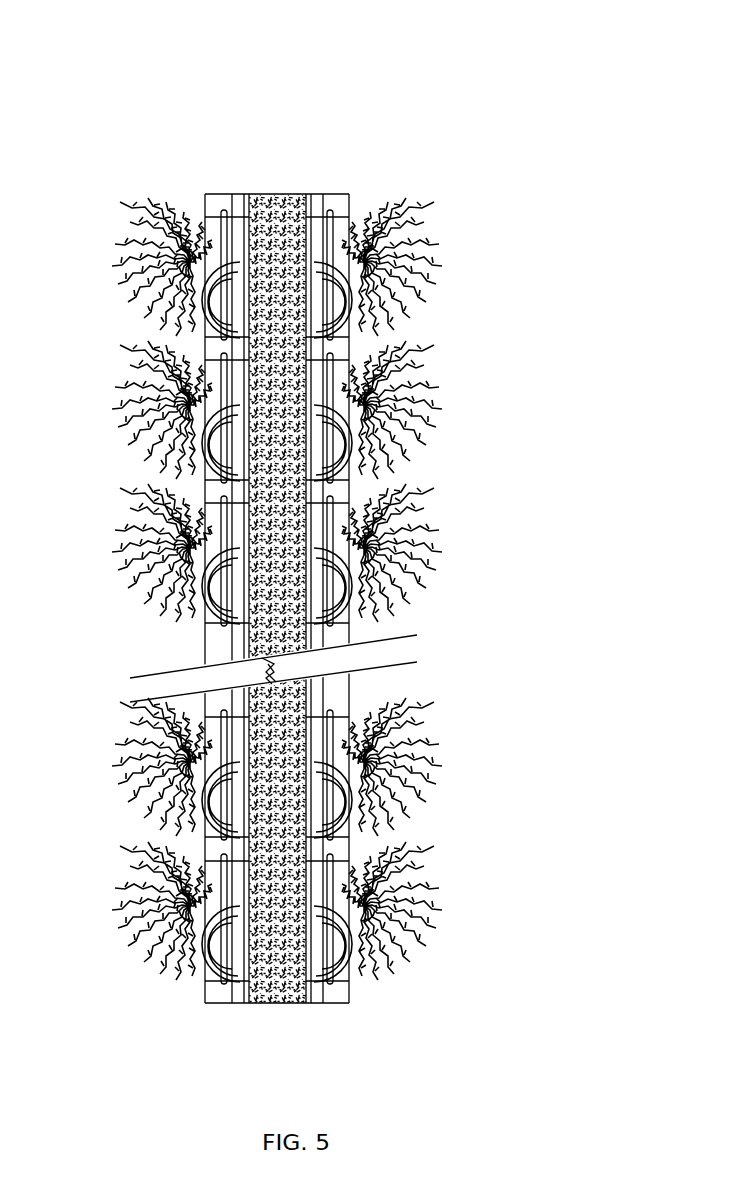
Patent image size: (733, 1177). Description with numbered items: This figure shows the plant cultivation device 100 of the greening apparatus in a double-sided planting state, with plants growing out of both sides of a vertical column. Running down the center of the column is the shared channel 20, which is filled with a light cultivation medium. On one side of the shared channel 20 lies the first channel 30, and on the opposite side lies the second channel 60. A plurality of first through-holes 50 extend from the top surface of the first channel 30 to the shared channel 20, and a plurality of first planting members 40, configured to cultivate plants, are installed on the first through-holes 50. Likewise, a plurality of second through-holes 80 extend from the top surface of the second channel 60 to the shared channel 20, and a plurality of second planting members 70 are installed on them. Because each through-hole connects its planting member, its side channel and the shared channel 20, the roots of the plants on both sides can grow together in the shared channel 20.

The plant cultivation device 100 is at (275, 557).
The shared channel 20 is at (275, 1003).
The first channel 30 is at (237, 1003).
The second channel 60 is at (313, 1003).
The first planting member 40 is at (202, 967).
The second through-hole 80 is at (348, 963).
The first through-hole 50 is at (200, 803).
The second planting member 70 is at (397, 840).